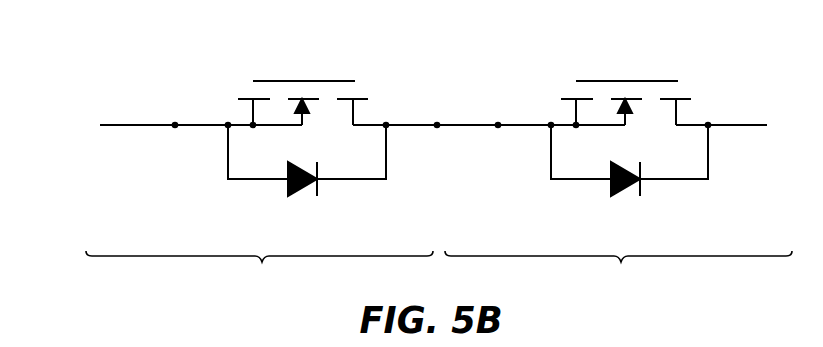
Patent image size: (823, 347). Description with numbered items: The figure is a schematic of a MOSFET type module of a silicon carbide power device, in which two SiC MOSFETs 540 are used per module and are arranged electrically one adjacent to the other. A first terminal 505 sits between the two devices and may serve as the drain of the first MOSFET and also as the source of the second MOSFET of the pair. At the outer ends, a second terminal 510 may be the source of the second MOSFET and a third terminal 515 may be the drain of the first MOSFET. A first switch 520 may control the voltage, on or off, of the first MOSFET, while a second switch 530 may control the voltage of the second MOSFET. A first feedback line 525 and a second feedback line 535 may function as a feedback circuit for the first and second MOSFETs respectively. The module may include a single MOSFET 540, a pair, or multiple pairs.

The first terminal 505 is at (437, 125).
The second terminal 510 is at (91, 125).
The third terminal 515 is at (775, 125).
The first switch 520 is at (576, 81).
The first feedback line 525 is at (498, 125).
The second switch 530 is at (253, 81).
The second feedback line 535 is at (175, 125).
The SiC MOSFET 540 is at (439, 268).